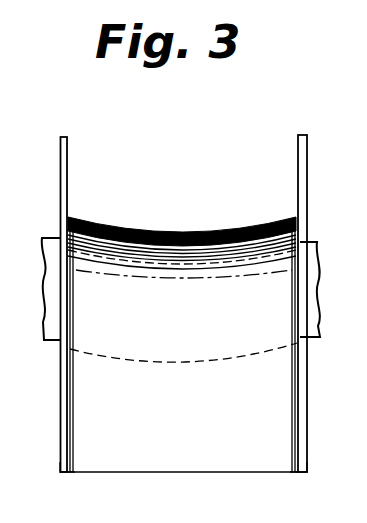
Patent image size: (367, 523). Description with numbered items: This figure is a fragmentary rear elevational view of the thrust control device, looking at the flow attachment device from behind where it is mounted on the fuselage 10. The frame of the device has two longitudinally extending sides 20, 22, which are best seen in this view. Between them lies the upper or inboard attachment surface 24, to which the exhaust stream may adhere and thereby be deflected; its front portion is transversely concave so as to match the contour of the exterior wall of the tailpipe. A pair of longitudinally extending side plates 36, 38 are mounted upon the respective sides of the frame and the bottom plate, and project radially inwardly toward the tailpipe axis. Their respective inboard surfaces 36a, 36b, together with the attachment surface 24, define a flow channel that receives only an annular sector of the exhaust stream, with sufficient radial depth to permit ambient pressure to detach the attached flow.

The fuselage 10 is at (320, 233).
The longitudinally extending side 20 is at (65, 453).
The longitudinally extending side 22 is at (296, 447).
The attachment surface 24 is at (222, 407).
The side plate 36 is at (64, 168).
The inboard surface 36a is at (70, 362).
The inboard surface 36b is at (272, 348).
The side plate 38 is at (298, 153).